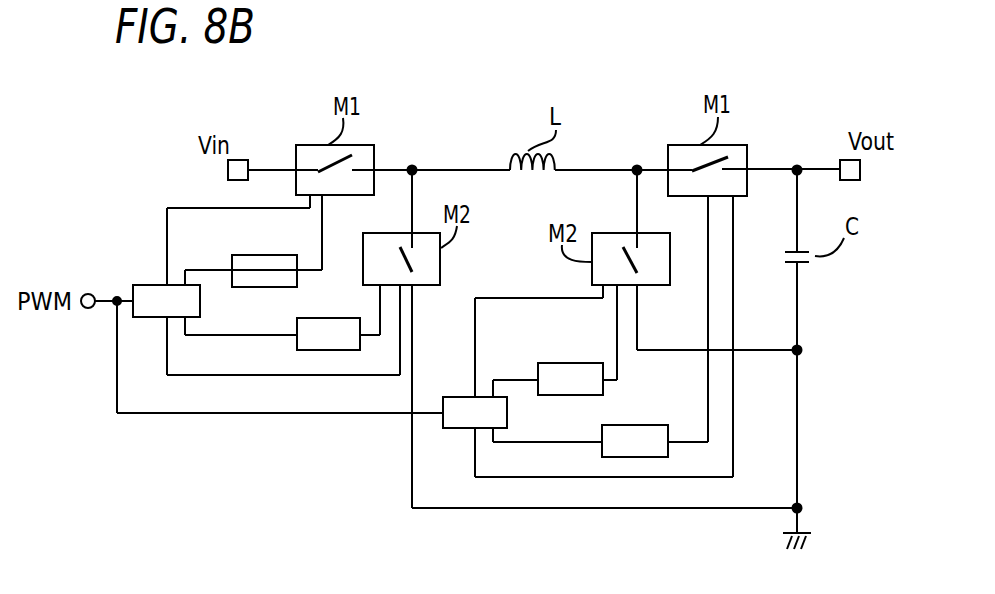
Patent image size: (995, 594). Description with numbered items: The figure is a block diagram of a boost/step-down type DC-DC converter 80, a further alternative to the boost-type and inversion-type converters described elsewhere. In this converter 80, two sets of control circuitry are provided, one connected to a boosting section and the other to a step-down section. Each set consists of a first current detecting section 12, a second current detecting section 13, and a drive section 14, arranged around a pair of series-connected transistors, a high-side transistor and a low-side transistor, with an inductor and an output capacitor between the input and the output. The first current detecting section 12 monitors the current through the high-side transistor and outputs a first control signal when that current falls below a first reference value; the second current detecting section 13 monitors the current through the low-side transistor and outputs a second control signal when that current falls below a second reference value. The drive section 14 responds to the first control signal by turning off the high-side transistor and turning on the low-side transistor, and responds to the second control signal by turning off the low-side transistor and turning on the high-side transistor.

The first current detecting section 12 is at (245, 255).
The second current detecting section 13 is at (317, 318).
The drive section 14 is at (152, 284).
The boost/step-down type DC-DC converter 80 is at (792, 104).